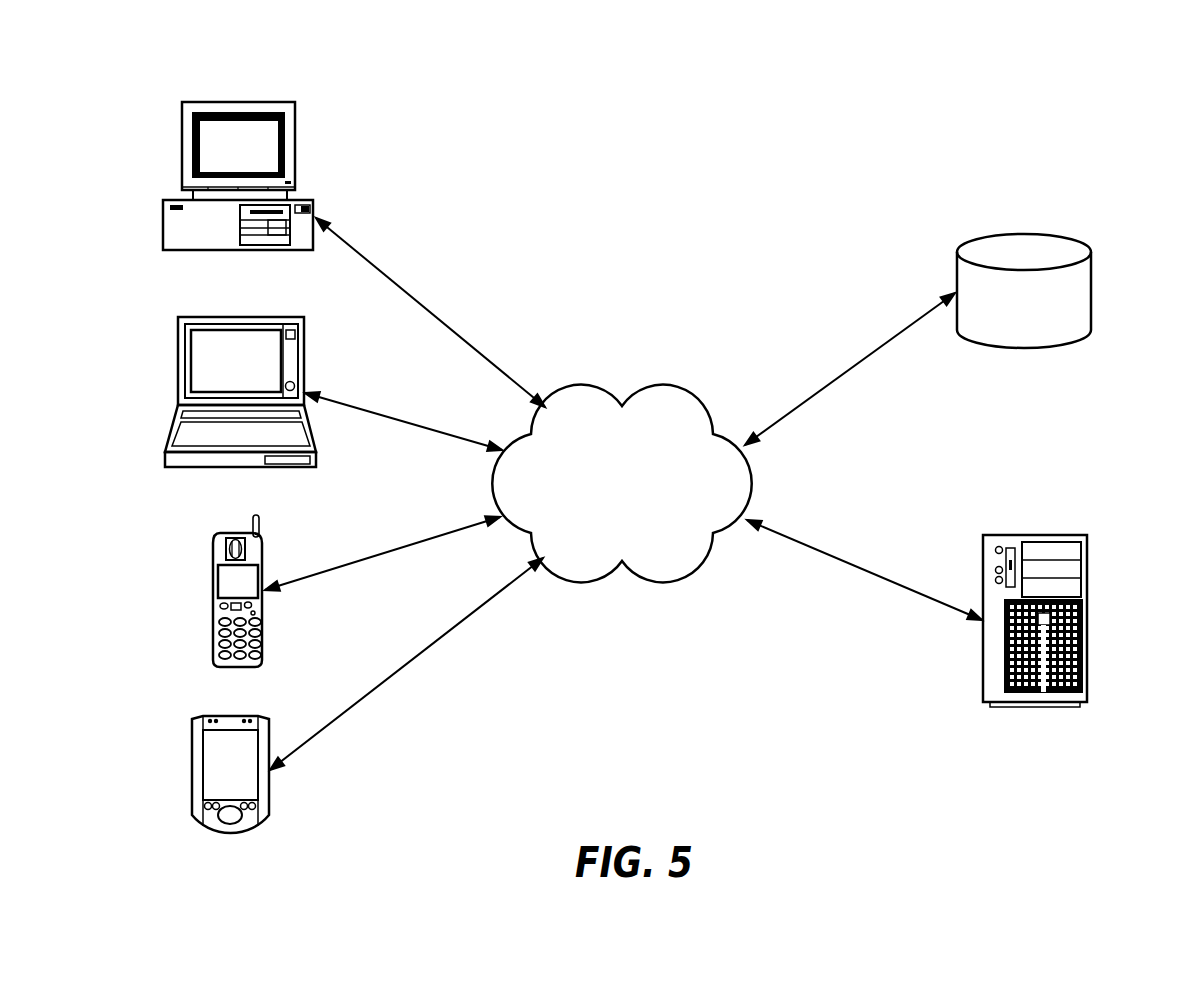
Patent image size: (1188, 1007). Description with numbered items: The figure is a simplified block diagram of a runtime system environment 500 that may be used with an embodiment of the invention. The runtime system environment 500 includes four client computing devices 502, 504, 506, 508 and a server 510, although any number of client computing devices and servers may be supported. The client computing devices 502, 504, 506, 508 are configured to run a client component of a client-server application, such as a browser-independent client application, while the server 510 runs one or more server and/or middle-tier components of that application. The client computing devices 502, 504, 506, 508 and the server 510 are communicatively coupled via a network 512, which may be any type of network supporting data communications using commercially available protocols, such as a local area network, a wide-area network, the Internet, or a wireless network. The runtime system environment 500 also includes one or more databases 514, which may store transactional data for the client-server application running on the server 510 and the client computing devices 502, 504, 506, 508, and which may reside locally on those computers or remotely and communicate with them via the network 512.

The runtime system environment 500 is at (1136, 143).
The client computing device 502 is at (238, 101).
The client computing device 504 is at (240, 317).
The client computing device 506 is at (232, 533).
The client computing device 508 is at (232, 716).
The server 510 is at (1035, 533).
The network 512 is at (621, 484).
The databases 514 is at (1065, 234).